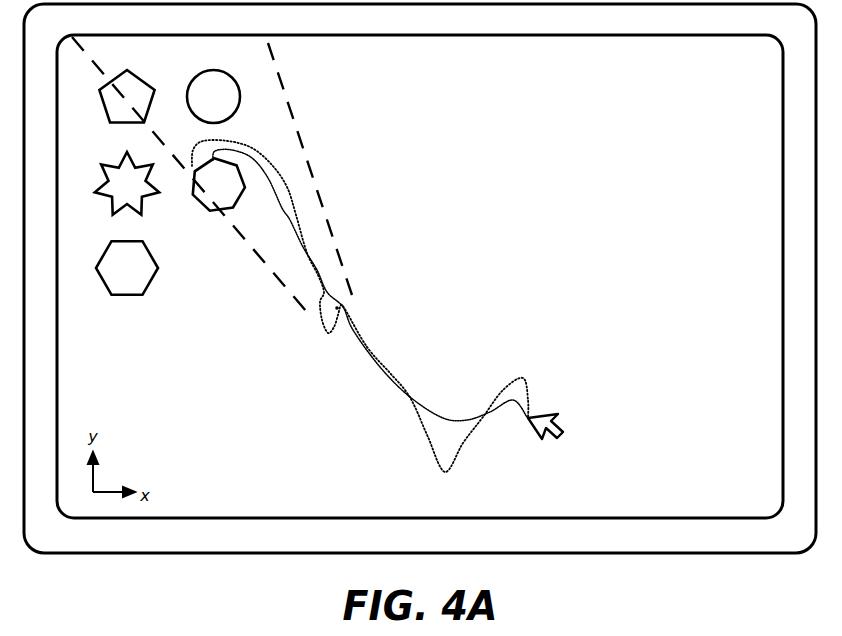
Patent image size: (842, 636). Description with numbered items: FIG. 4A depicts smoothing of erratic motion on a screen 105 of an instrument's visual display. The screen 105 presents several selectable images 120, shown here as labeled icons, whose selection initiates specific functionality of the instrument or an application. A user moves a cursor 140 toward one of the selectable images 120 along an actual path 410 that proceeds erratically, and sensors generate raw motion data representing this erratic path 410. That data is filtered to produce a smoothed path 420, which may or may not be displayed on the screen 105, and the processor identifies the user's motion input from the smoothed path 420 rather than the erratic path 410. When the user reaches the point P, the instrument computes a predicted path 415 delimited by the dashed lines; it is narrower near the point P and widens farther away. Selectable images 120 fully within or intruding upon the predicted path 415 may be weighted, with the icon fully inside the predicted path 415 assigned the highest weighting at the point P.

The screen 105 is at (738, 96).
The selectable images 120 is at (240, 164).
The cursor 140 is at (559, 418).
The actual path 410 is at (507, 388).
The predicted path 415 is at (290, 157).
The smoothed path 420 is at (318, 258).